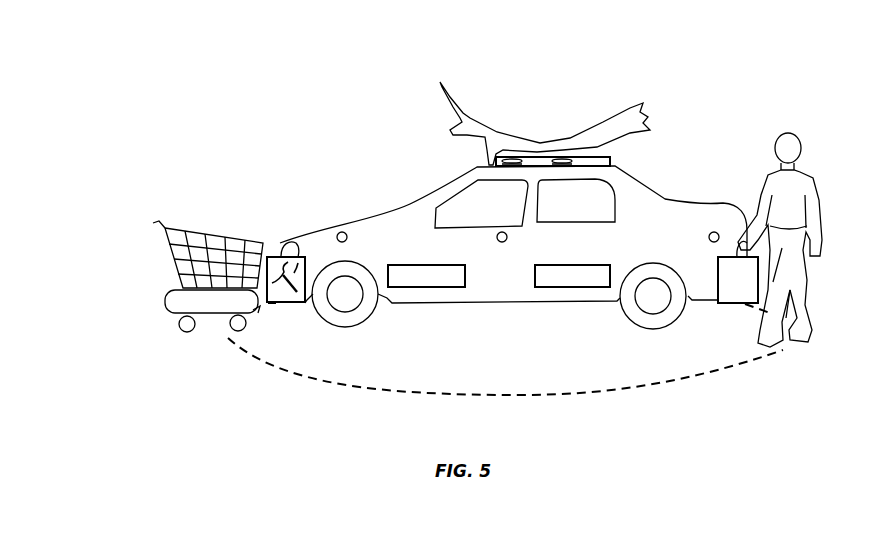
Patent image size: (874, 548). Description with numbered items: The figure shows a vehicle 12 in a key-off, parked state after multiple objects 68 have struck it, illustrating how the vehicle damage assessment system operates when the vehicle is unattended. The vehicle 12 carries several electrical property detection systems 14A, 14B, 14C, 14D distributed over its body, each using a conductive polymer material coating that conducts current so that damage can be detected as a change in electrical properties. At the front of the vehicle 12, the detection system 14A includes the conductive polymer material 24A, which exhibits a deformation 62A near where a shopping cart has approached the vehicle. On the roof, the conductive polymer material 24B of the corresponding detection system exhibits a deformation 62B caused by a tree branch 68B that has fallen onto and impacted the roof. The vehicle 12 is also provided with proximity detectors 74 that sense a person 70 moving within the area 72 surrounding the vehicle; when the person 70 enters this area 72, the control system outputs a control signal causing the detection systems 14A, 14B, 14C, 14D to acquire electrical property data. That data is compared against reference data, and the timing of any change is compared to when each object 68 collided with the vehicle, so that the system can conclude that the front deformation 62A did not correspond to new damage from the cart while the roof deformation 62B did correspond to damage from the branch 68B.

The vehicle 12 is at (400, 207).
The electrical property detection system 14A is at (276, 246).
The electrical property detection system 14B is at (433, 295).
The electrical property detection system 14C is at (573, 295).
The electrical property detection system 14D is at (740, 320).
The conductive polymer material 24A is at (268, 306).
The conductive polymer material 24B is at (512, 157).
The deformation 62A is at (289, 294).
The deformation 62B is at (563, 157).
The object 68 is at (480, 160).
The object 68B is at (156, 223).
The person 70 is at (797, 135).
The area 72 is at (506, 395).
The proximity detector 74 is at (342, 232).